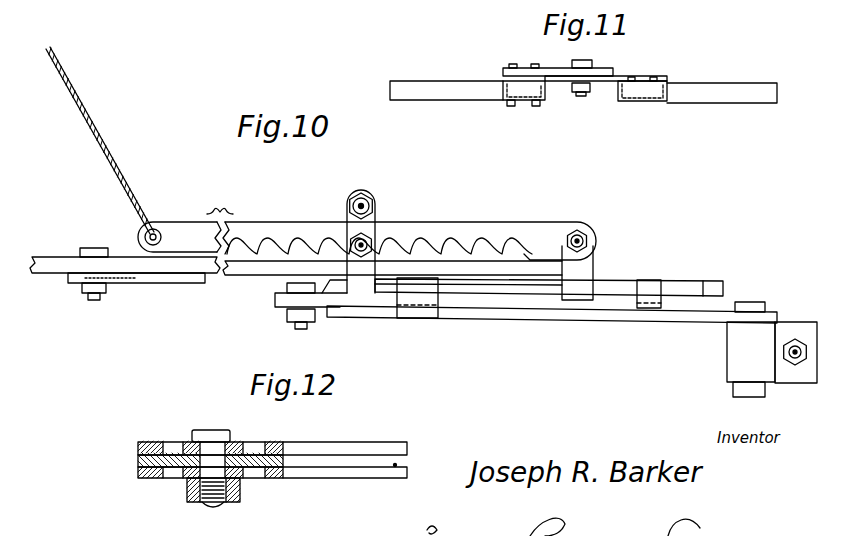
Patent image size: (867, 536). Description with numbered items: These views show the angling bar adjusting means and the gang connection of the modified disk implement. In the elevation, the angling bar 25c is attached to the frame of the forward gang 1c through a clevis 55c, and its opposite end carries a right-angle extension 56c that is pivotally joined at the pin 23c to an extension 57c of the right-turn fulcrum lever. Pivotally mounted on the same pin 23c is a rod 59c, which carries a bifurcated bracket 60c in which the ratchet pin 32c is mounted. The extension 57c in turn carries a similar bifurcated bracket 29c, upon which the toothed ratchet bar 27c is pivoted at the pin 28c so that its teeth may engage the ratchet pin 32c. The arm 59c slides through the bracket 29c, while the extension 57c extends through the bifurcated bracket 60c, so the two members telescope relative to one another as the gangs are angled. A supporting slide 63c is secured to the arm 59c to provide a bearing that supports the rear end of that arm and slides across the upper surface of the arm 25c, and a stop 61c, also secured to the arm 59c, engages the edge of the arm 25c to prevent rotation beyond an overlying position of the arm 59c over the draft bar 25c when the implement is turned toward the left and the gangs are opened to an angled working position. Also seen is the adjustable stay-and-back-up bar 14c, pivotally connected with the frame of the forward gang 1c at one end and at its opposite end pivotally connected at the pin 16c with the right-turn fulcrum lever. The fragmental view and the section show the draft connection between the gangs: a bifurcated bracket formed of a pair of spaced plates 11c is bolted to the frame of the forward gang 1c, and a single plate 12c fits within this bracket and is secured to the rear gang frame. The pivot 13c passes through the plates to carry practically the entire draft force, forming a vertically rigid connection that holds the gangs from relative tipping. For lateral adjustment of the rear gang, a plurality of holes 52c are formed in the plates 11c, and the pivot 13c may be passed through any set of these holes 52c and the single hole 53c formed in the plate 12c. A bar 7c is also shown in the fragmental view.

In FIG. 11, the forward gang 1c is at (448, 73).
In FIG. 11, the bar 7c is at (723, 76).
In FIG. 11, the spaced plates 11c is at (562, 83).
In FIG. 11, the single plate 12c is at (615, 75).
In FIG. 11, the pivot 13c is at (597, 56).
In FIG. 12, the pivot 13c is at (215, 450).
In FIG. 10, the stay-and-back-up bar 14c is at (170, 277).
In FIG. 10, the pin 16c is at (87, 287).
In FIG. 10, the pin 23c is at (310, 328).
In FIG. 10, the angling bar 25c is at (683, 318).
In FIG. 10, the ratchet bar 27c is at (505, 232).
In FIG. 10, the pin 28c is at (578, 235).
In FIG. 10, the bifurcated bracket 29c is at (587, 260).
In FIG. 10, the ratchet pin 32c is at (350, 242).
In FIG. 12, the holes 52c is at (256, 450).
In FIG. 12, the single hole 53c is at (252, 467).
In FIG. 10, the clevis 55c is at (737, 367).
In FIG. 10, the right-angle extension 56c is at (285, 307).
In FIG. 10, the extension 57c is at (543, 270).
In FIG. 10, the rod 59c is at (498, 285).
In FIG. 10, the bifurcated bracket 60c is at (370, 217).
In FIG. 10, the stop 61c is at (425, 298).
In FIG. 10, the supporting slide 63c is at (650, 297).